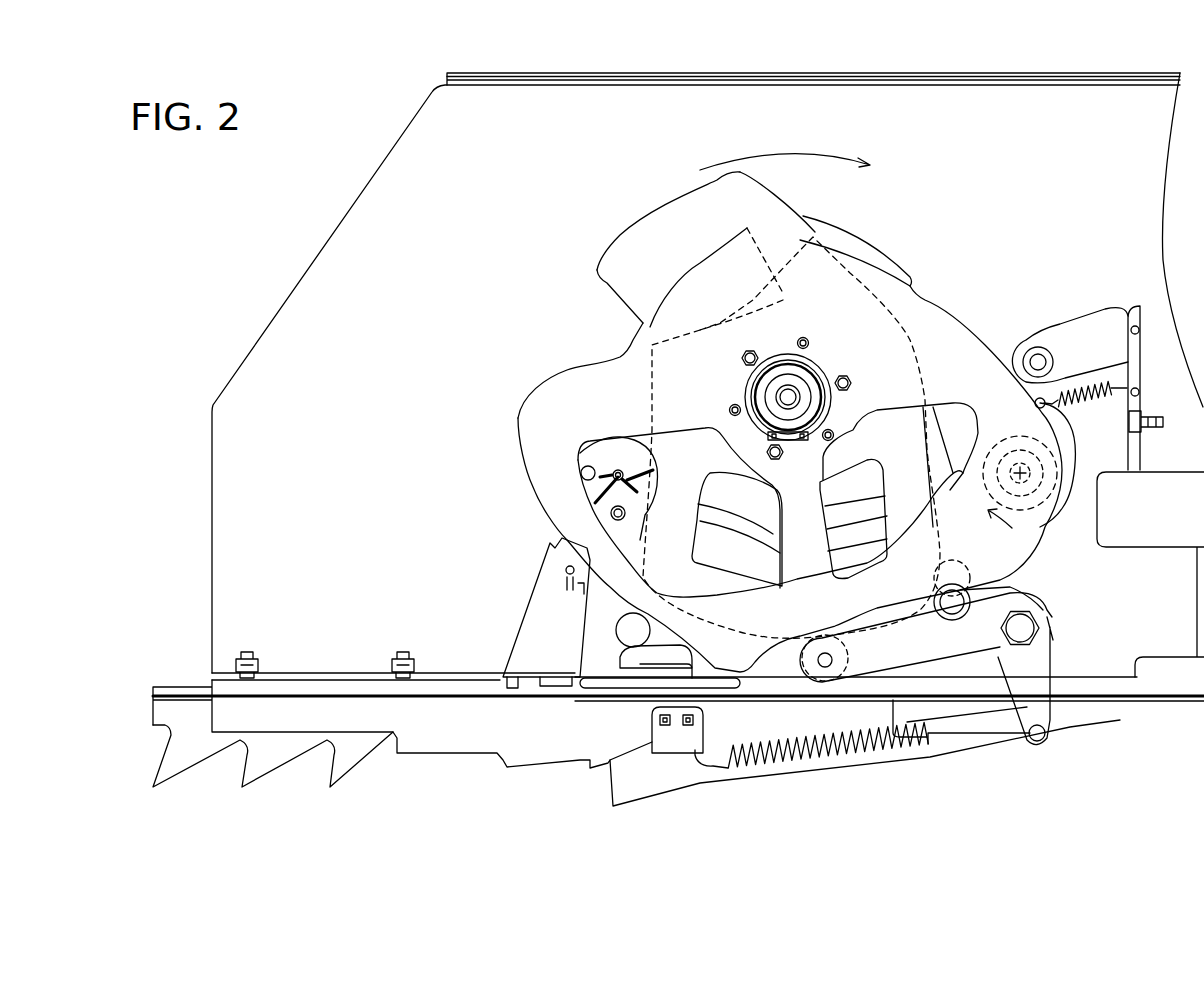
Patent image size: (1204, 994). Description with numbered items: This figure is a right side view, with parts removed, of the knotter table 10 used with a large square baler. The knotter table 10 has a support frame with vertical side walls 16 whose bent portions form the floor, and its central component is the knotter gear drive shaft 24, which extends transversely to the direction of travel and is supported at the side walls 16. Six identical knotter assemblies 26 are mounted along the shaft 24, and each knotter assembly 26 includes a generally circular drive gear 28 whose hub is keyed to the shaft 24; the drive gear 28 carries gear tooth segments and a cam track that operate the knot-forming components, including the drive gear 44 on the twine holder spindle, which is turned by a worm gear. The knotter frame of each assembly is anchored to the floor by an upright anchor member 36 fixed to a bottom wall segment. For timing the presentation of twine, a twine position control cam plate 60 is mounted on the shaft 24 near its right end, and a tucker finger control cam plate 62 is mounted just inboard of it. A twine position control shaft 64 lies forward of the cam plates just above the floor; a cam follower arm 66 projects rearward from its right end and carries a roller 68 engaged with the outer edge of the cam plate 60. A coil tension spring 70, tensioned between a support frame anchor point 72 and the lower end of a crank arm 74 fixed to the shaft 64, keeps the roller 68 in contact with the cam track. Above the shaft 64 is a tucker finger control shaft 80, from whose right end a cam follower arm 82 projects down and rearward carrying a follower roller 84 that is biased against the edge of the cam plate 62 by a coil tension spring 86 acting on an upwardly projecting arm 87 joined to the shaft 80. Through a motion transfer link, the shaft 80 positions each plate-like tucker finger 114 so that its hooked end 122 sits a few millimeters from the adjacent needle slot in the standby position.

The knotter table 10 is at (796, 112).
The side wall 16 is at (497, 292).
The knotter gear drive shaft 24 is at (760, 395).
The knotter assembly 26 is at (957, 193).
The drive gear 28 is at (865, 232).
The anchor member 36 is at (533, 607).
The drive gear 44 is at (1015, 471).
The twine position control cam plate 60 is at (575, 356).
The tucker finger control cam plate 62 is at (672, 183).
The twine position control shaft 64 is at (1057, 620).
The cam follower arm 66 is at (957, 655).
The roller 68 is at (850, 656).
The coil tension spring 70 is at (843, 757).
The support frame anchor point 72 is at (678, 740).
The crank arm 74 is at (1037, 703).
The tucker finger control shaft 80 is at (1070, 533).
The cam follower arm 82 is at (1024, 557).
The follower roller 84 is at (980, 573).
The coil tension spring 86 is at (1063, 385).
The arm 87 is at (1023, 417).
The tucker finger 114 is at (601, 650).
The hooked end 122 is at (647, 680).